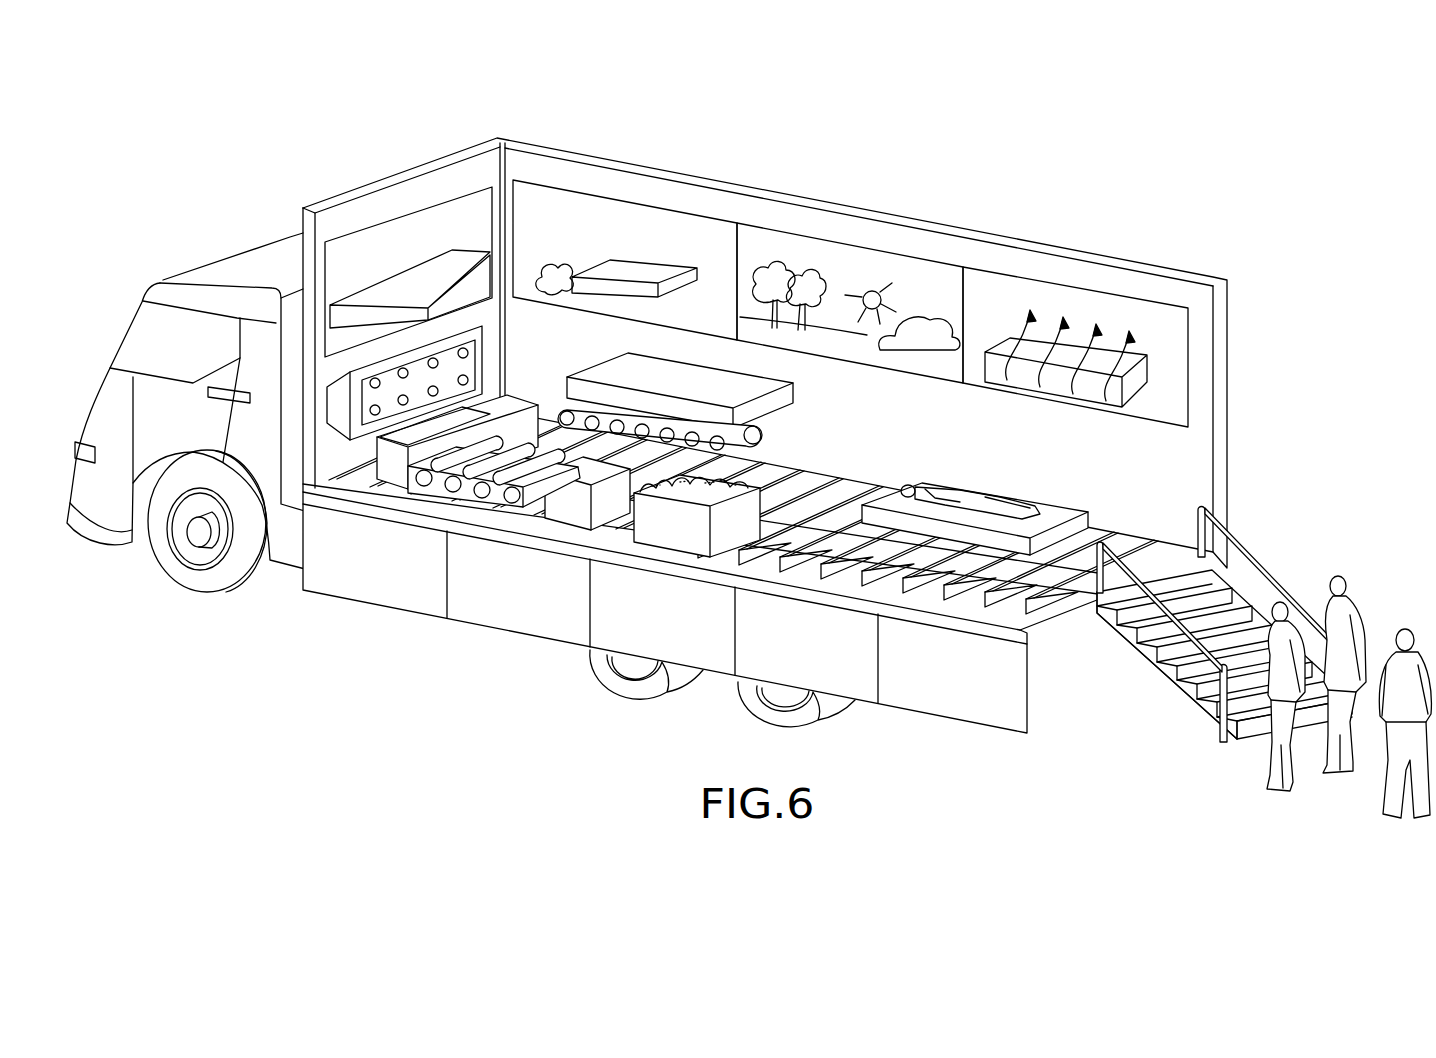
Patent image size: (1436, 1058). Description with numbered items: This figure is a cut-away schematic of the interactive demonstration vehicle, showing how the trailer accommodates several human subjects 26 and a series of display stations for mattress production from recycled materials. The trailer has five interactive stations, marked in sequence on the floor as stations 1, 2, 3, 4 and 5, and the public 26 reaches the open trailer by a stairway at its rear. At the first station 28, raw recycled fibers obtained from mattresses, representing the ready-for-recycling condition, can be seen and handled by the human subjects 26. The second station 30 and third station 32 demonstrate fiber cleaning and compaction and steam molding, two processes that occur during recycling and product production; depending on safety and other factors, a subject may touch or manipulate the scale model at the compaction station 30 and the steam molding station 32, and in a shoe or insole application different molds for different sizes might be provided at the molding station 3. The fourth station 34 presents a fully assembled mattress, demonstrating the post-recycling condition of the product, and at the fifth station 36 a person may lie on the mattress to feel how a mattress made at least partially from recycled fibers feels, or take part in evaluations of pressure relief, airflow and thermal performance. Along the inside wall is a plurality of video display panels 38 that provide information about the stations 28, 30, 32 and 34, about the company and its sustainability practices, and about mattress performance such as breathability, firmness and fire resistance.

The human subjects 26 is at (1332, 567).
The first station 28 is at (680, 527).
The second station 30 is at (470, 500).
The third station 32 is at (358, 402).
The fourth station 34 is at (680, 377).
The fifth station 36 is at (995, 488).
The video display panels 38 is at (377, 217).
The station 1 is at (736, 520).
The station 2 is at (587, 493).
The molding station 3 is at (457, 442).
The station 4 is at (481, 400).
The station 5 is at (780, 420).